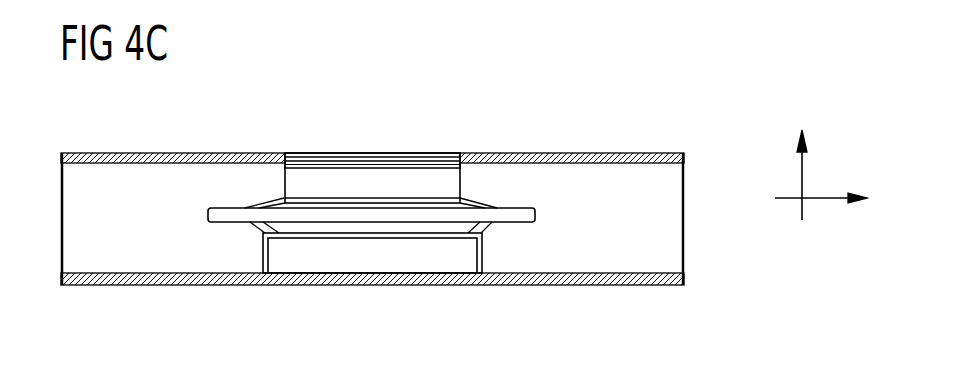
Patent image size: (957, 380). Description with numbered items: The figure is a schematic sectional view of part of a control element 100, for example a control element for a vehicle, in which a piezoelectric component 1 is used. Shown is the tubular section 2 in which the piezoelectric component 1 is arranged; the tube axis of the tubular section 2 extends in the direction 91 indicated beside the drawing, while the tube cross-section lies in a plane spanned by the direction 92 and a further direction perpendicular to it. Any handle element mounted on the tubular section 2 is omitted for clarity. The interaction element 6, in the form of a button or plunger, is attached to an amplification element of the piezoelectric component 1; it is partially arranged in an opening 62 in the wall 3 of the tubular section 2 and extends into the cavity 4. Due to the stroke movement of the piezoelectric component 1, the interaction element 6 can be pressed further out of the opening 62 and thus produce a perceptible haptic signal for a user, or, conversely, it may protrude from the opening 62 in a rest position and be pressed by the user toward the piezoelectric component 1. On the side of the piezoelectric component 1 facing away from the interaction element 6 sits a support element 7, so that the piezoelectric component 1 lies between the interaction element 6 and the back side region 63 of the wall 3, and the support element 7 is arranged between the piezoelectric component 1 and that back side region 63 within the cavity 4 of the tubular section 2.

The control element 100 is at (531, 90).
The piezoelectric component 1 is at (537, 216).
The tubular section 2 is at (110, 177).
The wall 3 is at (595, 153).
The cavity 4 is at (672, 219).
The interaction element 6 is at (385, 172).
The opening 62 is at (277, 160).
The support element 7 is at (312, 260).
The back side region 63 is at (380, 285).
The direction 91 is at (835, 200).
The direction 92 is at (802, 172).